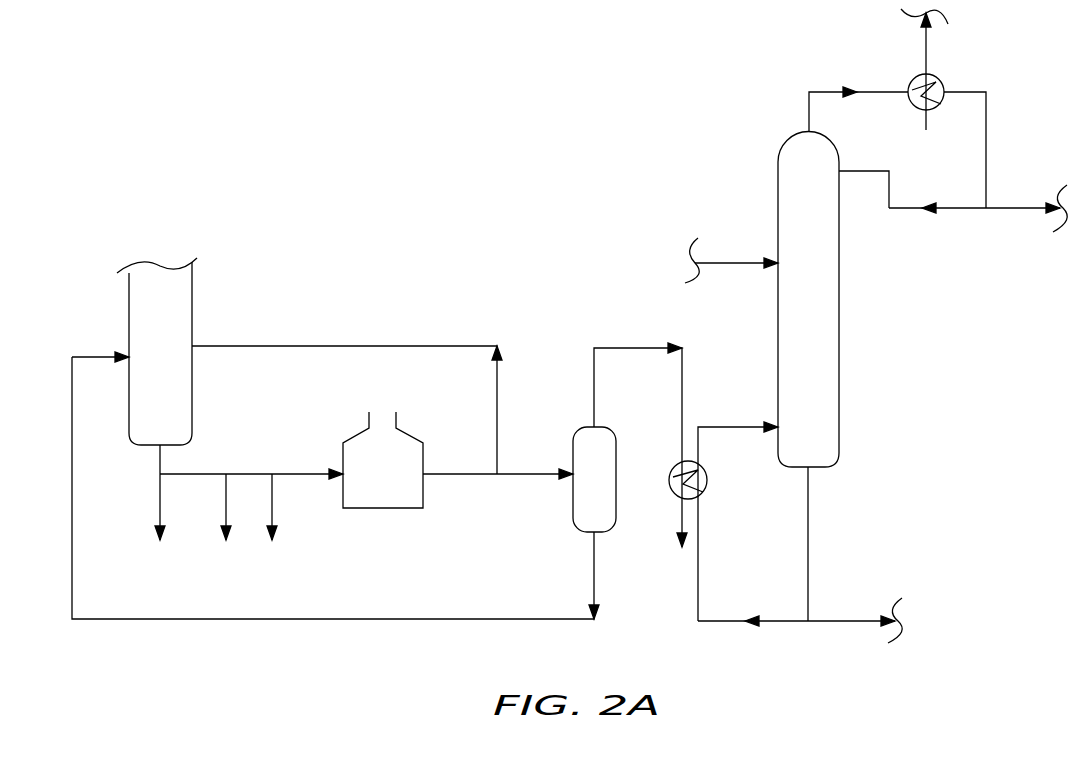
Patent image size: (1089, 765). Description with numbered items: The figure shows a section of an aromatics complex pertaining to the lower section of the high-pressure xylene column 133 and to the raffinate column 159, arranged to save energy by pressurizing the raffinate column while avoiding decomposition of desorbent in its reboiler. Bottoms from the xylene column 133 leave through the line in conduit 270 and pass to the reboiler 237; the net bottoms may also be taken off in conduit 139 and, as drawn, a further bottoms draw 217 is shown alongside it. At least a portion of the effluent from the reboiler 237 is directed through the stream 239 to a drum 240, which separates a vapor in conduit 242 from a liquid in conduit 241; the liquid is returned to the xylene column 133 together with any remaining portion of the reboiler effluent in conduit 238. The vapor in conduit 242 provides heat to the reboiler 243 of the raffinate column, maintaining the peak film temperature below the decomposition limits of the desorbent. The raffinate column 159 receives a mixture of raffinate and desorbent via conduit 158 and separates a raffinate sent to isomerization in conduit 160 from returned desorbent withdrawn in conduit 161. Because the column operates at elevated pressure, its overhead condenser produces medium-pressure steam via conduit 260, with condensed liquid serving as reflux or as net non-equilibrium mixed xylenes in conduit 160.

The xylene column 133 is at (192, 308).
The conduit 238 is at (413, 345).
The liquid stream 239 is at (528, 473).
The drum 240 is at (572, 507).
The conduit 241 is at (594, 565).
The reboiler 237 is at (385, 510).
The conduit 242 is at (683, 377).
The reboiler 243 is at (712, 477).
The conduit 158 is at (727, 260).
The raffinate column 159 is at (839, 308).
The conduit 160 is at (1018, 208).
The conduit 161 is at (848, 620).
The conduit 260 is at (927, 50).
The conduit 270 is at (158, 497).
The conduit 139 is at (223, 497).
The product stream 217 is at (273, 497).